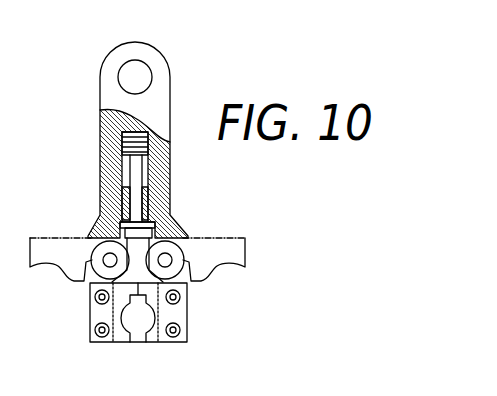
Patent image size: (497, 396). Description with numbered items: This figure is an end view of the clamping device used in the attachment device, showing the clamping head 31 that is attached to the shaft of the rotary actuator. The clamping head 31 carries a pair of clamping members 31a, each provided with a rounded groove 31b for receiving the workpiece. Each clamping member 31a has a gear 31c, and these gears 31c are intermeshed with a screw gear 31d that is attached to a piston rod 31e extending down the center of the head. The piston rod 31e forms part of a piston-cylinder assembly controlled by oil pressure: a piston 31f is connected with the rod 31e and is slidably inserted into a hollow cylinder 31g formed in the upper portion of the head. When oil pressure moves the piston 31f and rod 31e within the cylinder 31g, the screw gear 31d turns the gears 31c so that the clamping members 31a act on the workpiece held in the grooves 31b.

The clamping head 31 is at (136, 42).
The clamping member 31a is at (108, 342).
The rounded groove 31b is at (121, 313).
The gear 31c is at (96, 259).
The screw gear 31d is at (150, 235).
The piston rod 31e is at (138, 174).
The piston 31f is at (124, 141).
The hollow cylinder 31g is at (123, 178).